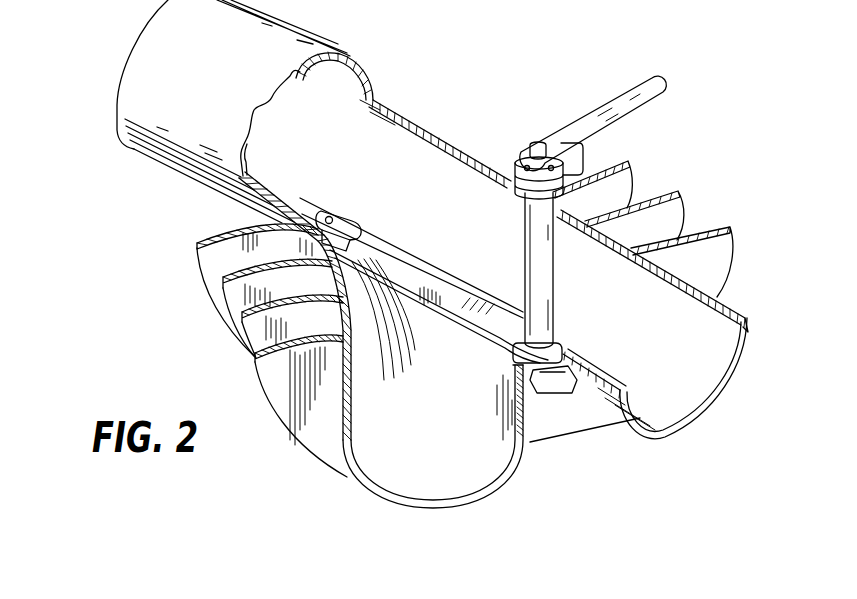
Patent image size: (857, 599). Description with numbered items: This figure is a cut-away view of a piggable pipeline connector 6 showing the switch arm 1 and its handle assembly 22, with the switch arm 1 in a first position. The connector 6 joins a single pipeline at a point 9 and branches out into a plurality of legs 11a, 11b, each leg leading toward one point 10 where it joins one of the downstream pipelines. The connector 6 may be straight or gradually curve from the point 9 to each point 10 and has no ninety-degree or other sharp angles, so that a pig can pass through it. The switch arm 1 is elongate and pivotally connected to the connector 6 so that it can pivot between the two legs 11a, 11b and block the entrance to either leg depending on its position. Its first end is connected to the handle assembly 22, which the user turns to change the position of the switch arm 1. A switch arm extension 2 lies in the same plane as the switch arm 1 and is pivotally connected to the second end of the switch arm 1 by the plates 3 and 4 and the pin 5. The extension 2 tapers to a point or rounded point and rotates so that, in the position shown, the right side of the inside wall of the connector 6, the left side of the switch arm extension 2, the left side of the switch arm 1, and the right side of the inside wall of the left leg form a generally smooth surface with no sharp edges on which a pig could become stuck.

The switch arm 1 is at (427, 272).
The switch arm extension 2 is at (296, 206).
The plate 3 is at (349, 222).
The plate 4 is at (226, 292).
The pin 5 is at (332, 215).
The piggable pipeline connector 6 is at (220, 84).
The point 9 is at (124, 60).
The point 10 is at (462, 503).
The leg 11a is at (468, 445).
The leg 11b is at (686, 368).
The handle assembly 22 is at (686, 60).